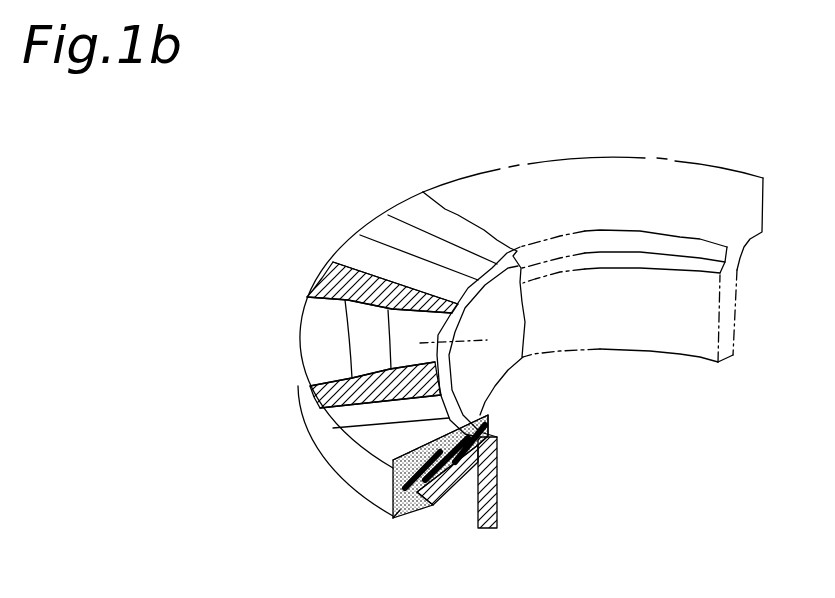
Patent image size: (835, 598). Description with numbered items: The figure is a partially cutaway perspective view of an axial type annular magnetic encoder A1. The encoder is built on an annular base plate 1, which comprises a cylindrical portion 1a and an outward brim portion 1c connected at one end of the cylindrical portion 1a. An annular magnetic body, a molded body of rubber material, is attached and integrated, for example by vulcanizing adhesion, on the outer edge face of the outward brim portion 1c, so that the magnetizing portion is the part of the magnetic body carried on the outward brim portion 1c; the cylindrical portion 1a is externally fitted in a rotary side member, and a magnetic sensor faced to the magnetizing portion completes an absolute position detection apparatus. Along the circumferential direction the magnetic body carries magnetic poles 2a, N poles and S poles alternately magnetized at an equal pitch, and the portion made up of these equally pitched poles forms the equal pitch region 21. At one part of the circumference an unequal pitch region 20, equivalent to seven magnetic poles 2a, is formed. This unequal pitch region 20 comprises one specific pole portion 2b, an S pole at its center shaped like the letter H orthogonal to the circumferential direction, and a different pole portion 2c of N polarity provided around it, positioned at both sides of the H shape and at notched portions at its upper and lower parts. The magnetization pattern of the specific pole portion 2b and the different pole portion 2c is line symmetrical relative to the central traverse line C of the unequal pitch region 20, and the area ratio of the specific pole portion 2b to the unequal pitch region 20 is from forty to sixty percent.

The annular base plate 1 is at (590, 371).
The cylindrical portion 1a is at (497, 497).
The outward brim portion 1c is at (440, 507).
The magnetic poles 2a is at (379, 326).
The equal pitch region 21 is at (388, 450).
The specific pole portion 2b is at (327, 288).
The different pole portion 2c is at (327, 272).
The unequal pitch region 20 is at (299, 341).
The annular magnetic encoder A1 is at (366, 200).
The central traverse line C is at (487, 340).